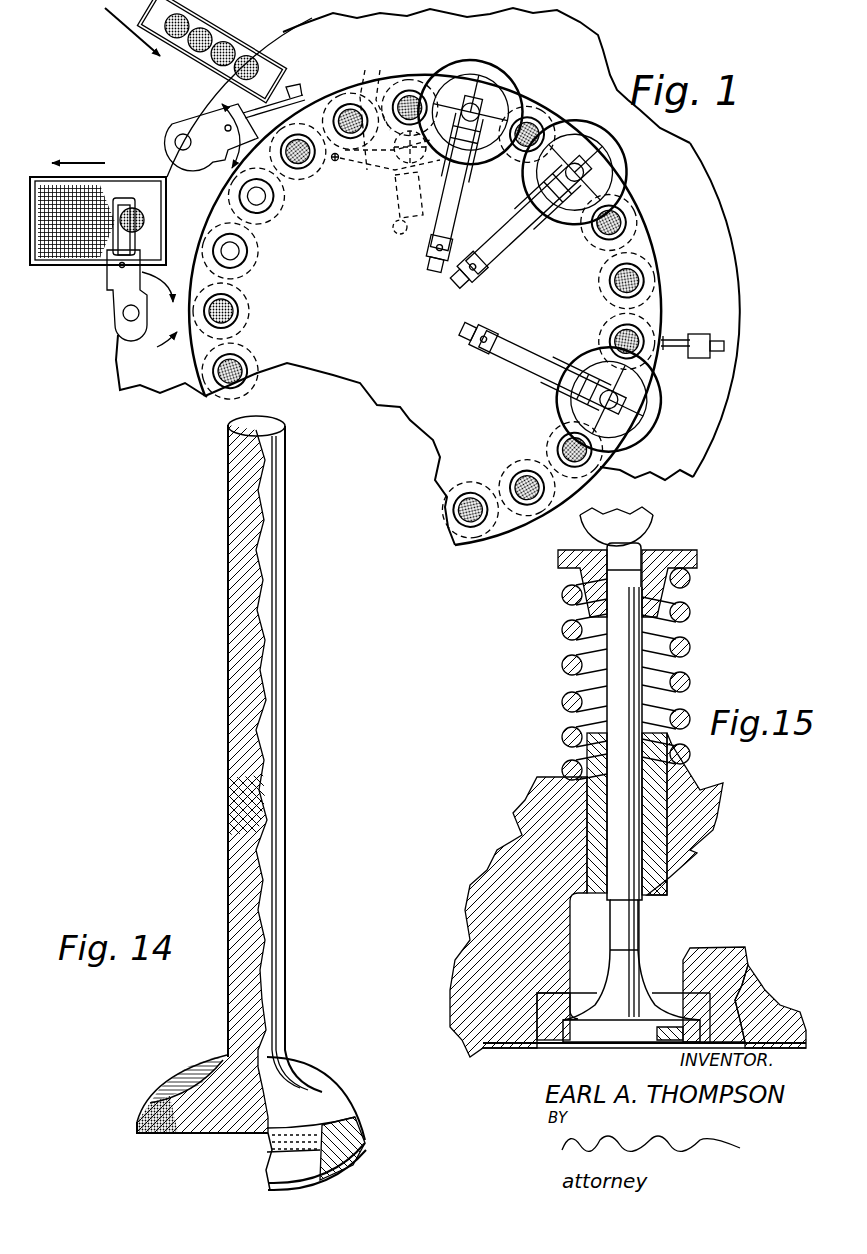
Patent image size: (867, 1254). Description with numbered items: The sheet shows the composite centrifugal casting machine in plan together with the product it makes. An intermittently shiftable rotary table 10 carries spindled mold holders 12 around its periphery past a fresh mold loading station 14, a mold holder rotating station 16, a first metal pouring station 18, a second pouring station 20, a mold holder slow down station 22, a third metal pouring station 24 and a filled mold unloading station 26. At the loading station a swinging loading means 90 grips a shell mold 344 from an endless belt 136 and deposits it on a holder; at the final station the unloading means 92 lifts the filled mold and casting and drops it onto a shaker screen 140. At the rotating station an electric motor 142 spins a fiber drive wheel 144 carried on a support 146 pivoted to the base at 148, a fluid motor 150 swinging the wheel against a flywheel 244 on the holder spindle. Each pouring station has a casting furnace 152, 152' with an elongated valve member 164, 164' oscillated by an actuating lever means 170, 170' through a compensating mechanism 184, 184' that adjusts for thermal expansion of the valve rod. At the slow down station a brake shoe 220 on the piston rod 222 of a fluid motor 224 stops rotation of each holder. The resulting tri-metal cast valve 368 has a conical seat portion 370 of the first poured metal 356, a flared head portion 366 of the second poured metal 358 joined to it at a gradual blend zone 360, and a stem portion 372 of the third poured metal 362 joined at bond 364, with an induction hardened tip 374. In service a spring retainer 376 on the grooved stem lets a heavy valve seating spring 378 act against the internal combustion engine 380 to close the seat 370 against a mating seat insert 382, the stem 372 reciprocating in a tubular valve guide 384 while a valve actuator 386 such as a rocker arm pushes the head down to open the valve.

In FIG. 1, the rotary table 10 is at (340, 335).
In FIG. 1, the mold holder 12 is at (240, 313).
In FIG. 1, the fresh mold loading station 14 is at (200, 110).
In FIG. 1, the mold holder rotating station 16 is at (408, 64).
In FIG. 1, the first metal pouring station 18 is at (488, 64).
In FIG. 1, the second metal pouring station 20 is at (601, 112).
In FIG. 1, the mold holder slow down station 22 is at (684, 326).
In FIG. 1, the third metal pouring station 24 is at (674, 413).
In FIG. 1, the filled mold unloading station 26 is at (153, 317).
In FIG. 1, the loading means 90 is at (216, 150).
In FIG. 1, the unloading means 92 is at (115, 302).
In FIG. 1, the endless belt 136 is at (216, 30).
In FIG. 1, the shaker screen 140 is at (117, 188).
In FIG. 1, the electric motor 142 is at (367, 170).
In FIG. 1, the fiber drive wheel 144 is at (378, 178).
In FIG. 1, the support 146 is at (398, 215).
In FIG. 1, the pivot 148 is at (332, 162).
In FIG. 1, the fluid motor 150 is at (398, 237).
In FIG. 1, the casting furnace 152 is at (476, 100).
In FIG. 1, the casting furnace 152' is at (604, 173).
In FIG. 1, the valve member 164 is at (458, 80).
In FIG. 1, the valve member 164' is at (620, 161).
In FIG. 1, the actuating lever means 170 is at (483, 178).
In FIG. 1, the actuating lever means 170' is at (547, 235).
In FIG. 1, the compensating mechanism 184 is at (414, 262).
In FIG. 1, the compensating mechanism 184' is at (509, 276).
In FIG. 1, the brake shoe 220 is at (672, 350).
In FIG. 1, the piston rod 222 is at (688, 340).
In FIG. 1, the fluid motor 224 is at (724, 346).
In FIG. 1, the flywheel 244 is at (317, 108).
In FIG. 1, the shell mold 344 is at (350, 110).
In FIG. 14, the first poured metal 356 is at (137, 1126).
In FIG. 14, the second poured metal 358 is at (240, 1080).
In FIG. 14, the blend zone 360 is at (174, 1120).
In FIG. 14, the third poured metal 362 is at (236, 695).
In FIG. 14, the bond 364 is at (236, 796).
In FIG. 14, the head portion 366 is at (292, 1088).
In FIG. 15, the head portion 366 is at (633, 985).
In FIG. 14, the cast valve 368 is at (300, 875).
In FIG. 15, the cast valve 368 is at (652, 915).
In FIG. 14, the conical seat portion 370 is at (350, 1123).
In FIG. 15, the conical seat portion 370 is at (702, 1012).
In FIG. 14, the stem portion 372 is at (278, 619).
In FIG. 15, the stem portion 372 is at (632, 663).
In FIG. 14, the tip 374 is at (270, 438).
In FIG. 15, the tip 374 is at (646, 552).
In FIG. 15, the spring retainer 376 is at (698, 558).
In FIG. 15, the valve seating spring 378 is at (562, 672).
In FIG. 15, the internal combustion engine 380 is at (560, 786).
In FIG. 15, the seat insert 382 is at (540, 1003).
In FIG. 15, the valve guide 384 is at (596, 853).
In FIG. 15, the valve actuator 386 is at (622, 528).